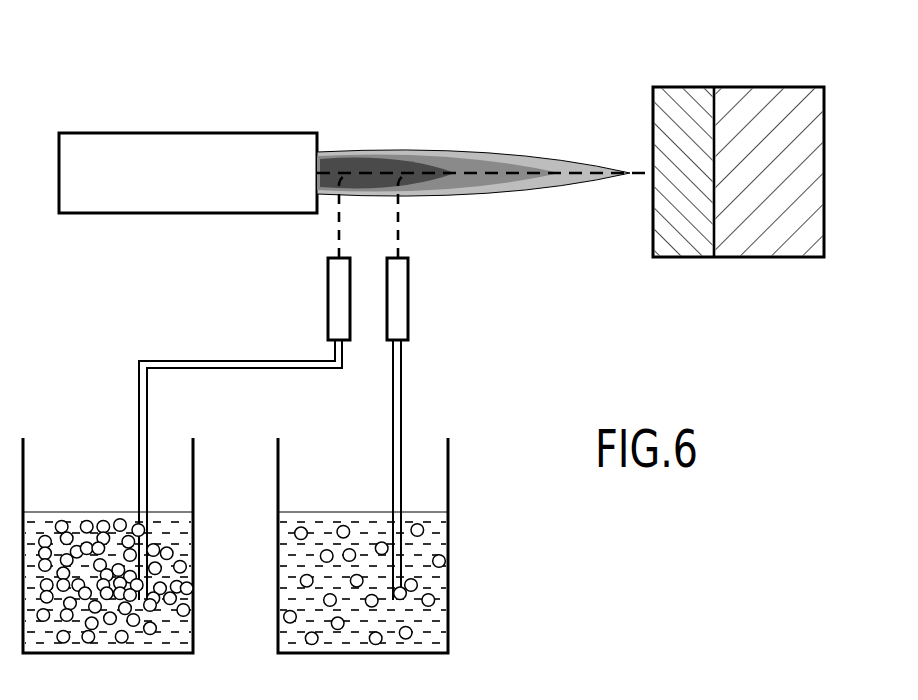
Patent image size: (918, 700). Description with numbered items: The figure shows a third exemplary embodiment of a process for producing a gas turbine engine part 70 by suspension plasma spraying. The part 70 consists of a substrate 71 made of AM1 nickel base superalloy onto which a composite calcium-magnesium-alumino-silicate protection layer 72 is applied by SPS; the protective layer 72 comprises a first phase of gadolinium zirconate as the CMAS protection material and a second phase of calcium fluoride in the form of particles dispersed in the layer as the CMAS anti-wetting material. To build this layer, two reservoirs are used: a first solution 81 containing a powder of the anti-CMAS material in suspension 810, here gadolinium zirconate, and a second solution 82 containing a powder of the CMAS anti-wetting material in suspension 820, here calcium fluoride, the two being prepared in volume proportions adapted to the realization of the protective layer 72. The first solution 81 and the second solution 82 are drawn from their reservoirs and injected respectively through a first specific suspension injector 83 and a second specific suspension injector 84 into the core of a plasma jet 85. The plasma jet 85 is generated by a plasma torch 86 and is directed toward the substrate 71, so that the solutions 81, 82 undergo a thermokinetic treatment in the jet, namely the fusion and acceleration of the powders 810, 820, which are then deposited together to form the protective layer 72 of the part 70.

The gas turbine engine part 70 is at (768, 77).
The substrate 71 is at (757, 248).
The CMAS protection layer 72 is at (680, 248).
The first solution 81 is at (65, 506).
The second solution 82 is at (337, 506).
The first suspension injector 83 is at (329, 298).
The second suspension injector 84 is at (406, 298).
The plasma jet 85 is at (478, 191).
The plasma torch 86 is at (170, 187).
The powder of anti-CMAS material in suspension 810 is at (105, 600).
The powder of CMAS anti-wetting material in suspension 820 is at (357, 588).